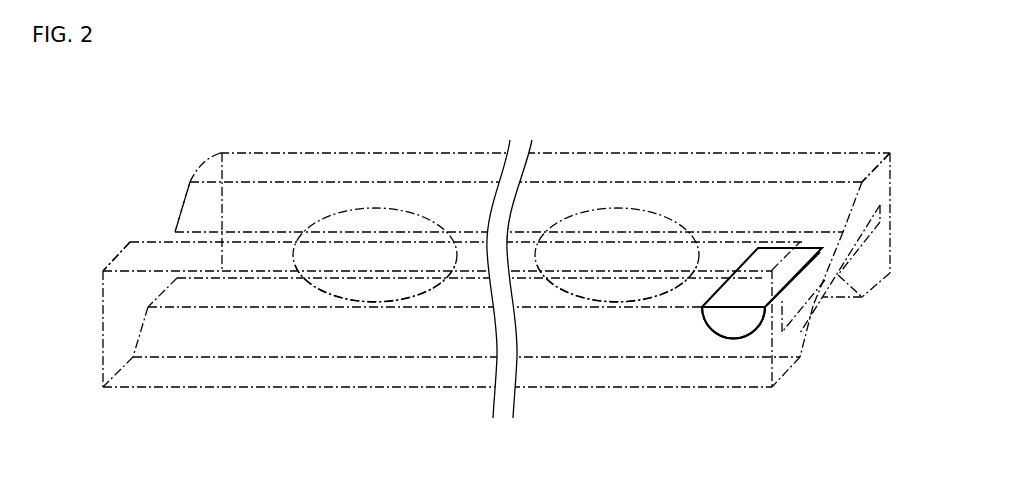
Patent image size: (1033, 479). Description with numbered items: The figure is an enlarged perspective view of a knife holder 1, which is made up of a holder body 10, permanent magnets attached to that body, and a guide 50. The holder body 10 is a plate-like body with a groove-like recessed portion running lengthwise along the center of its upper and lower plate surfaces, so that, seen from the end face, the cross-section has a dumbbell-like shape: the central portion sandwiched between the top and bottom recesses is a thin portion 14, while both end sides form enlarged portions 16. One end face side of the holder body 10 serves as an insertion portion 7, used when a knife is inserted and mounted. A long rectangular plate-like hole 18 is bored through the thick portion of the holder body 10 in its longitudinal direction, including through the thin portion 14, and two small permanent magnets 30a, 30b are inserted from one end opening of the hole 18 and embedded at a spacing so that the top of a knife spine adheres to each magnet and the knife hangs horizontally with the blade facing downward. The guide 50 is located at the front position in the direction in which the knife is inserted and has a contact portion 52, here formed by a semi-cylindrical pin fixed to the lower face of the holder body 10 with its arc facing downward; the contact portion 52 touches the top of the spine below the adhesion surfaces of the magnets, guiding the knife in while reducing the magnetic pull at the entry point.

The knife holder 1 is at (484, 132).
The insertion portion 7 is at (862, 323).
The holder body 10 is at (248, 153).
The thin portion 14 is at (175, 233).
The enlarged portion 16 is at (120, 257).
The hole 18 is at (882, 215).
The first permanent magnet 30a is at (636, 207).
The second permanent magnet 30b is at (358, 207).
The guide 50 is at (758, 262).
The contact portion 52 is at (734, 327).